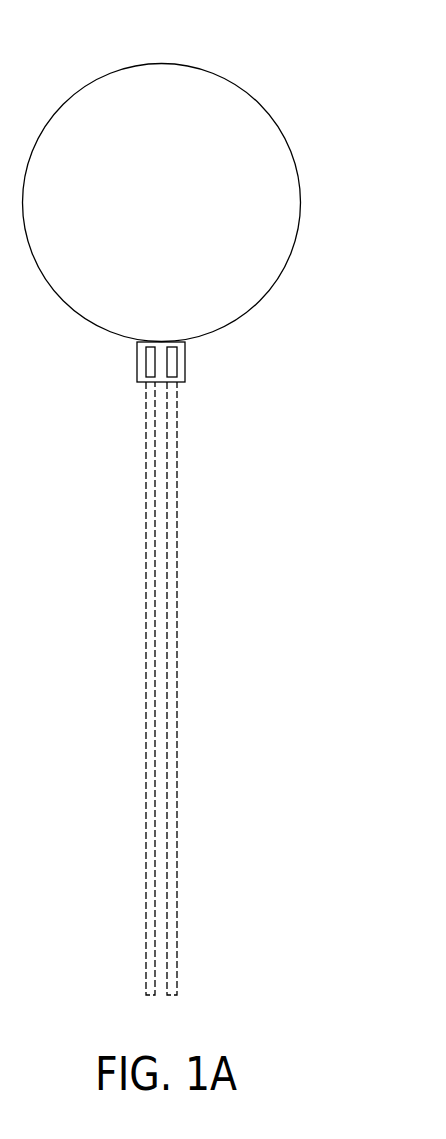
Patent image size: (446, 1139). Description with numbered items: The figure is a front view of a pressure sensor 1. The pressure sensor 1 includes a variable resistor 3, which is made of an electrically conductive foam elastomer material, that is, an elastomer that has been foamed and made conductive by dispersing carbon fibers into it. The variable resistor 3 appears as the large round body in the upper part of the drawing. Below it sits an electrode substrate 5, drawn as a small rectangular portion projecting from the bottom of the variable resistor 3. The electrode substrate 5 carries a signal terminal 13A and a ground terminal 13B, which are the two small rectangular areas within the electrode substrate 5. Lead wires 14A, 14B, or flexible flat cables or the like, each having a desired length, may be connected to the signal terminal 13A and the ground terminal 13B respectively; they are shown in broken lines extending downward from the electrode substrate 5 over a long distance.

The pressure sensor 1 is at (228, 63).
The variable resistor 3 is at (295, 203).
The electrode substrate 5 is at (185, 352).
The signal terminal 13A is at (172, 363).
The ground terminal 13B is at (150, 364).
The lead wire 14A is at (174, 473).
The lead wire 14B is at (148, 473).